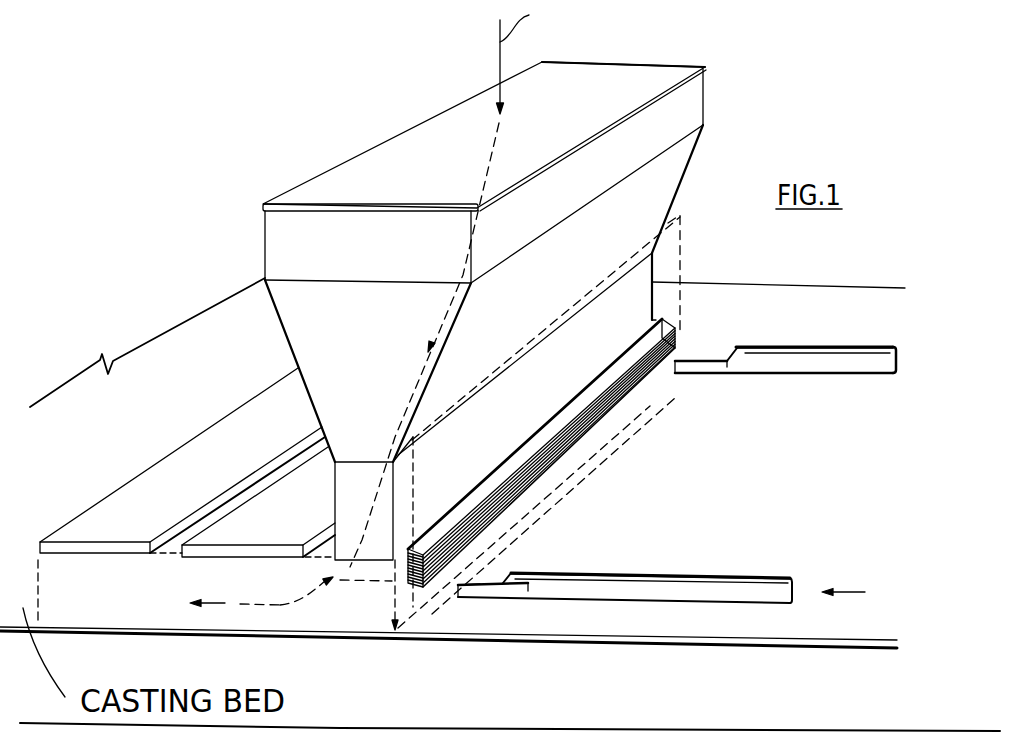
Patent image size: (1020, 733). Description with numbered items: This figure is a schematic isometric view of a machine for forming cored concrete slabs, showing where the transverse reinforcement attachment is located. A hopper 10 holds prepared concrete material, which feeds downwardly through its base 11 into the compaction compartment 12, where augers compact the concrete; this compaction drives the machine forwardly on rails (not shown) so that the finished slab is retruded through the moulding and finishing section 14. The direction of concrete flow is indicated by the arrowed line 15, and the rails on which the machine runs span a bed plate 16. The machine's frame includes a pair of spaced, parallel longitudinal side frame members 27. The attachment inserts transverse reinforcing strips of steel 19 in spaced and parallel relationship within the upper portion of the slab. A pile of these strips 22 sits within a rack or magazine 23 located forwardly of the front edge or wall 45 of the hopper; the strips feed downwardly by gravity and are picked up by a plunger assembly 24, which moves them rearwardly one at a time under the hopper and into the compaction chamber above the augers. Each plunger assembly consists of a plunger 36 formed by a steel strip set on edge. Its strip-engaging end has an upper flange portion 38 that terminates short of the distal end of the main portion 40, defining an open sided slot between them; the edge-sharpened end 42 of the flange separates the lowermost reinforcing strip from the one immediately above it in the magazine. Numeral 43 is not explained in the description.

The hopper 10 is at (682, 150).
The base 11 is at (383, 523).
The compaction compartment 12 is at (282, 532).
The moulding and finishing section 14 is at (55, 573).
The arrowed line 15 is at (493, 167).
The bed plate 16 is at (500, 504).
The transverse reinforcing strips of steel 19 is at (476, 502).
The pile of strips 22 is at (570, 450).
The rack or magazine 23 is at (683, 300).
The plunger assembly 24 is at (790, 446).
The longitudinal side frame members 27 is at (248, 618).
The plunger 36 is at (805, 365).
The upper flange portion 38 is at (557, 573).
The main portion 40 is at (683, 372).
The end of the flange 42 is at (512, 575).
The rail end portion 43 is at (688, 360).
The front edge or wall of the hopper 45 is at (654, 280).